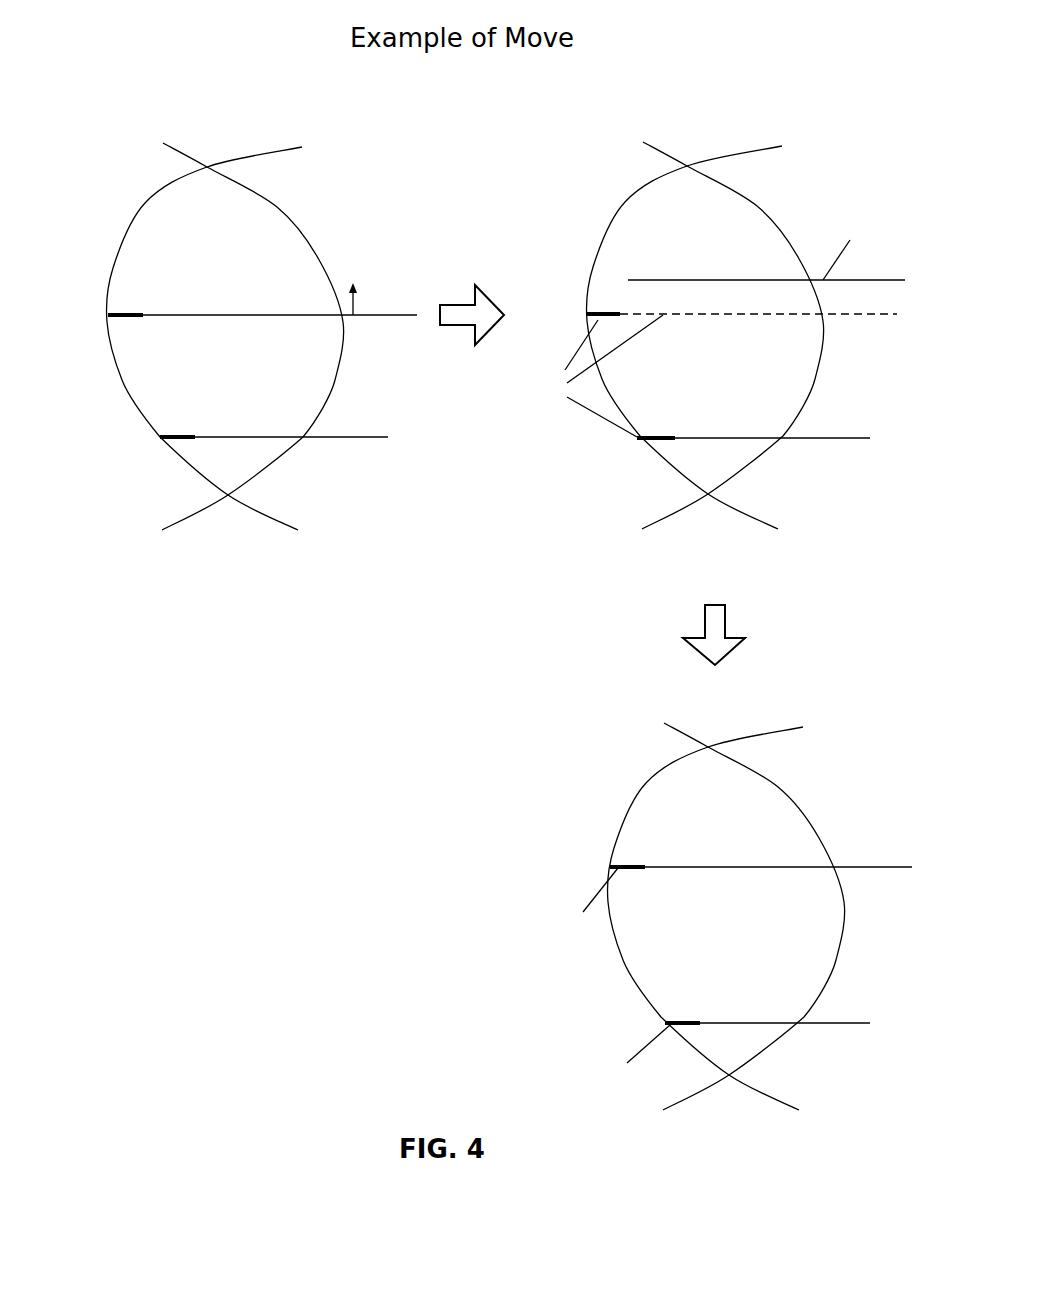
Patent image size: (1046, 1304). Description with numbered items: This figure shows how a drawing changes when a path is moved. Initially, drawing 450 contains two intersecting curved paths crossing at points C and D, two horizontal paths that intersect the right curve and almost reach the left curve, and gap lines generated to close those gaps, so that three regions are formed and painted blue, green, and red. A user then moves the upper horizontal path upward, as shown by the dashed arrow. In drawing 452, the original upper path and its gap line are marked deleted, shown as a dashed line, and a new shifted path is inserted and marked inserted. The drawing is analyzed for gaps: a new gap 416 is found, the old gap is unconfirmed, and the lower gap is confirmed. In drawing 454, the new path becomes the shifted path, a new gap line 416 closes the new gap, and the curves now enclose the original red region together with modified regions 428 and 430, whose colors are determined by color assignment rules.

The new gap line 416 is at (610, 866).
The modified region 428 is at (714, 819).
The modified region 430 is at (716, 935).
The drawing 450 is at (318, 130).
The drawing 452 is at (815, 130).
The drawing 454 is at (824, 722).